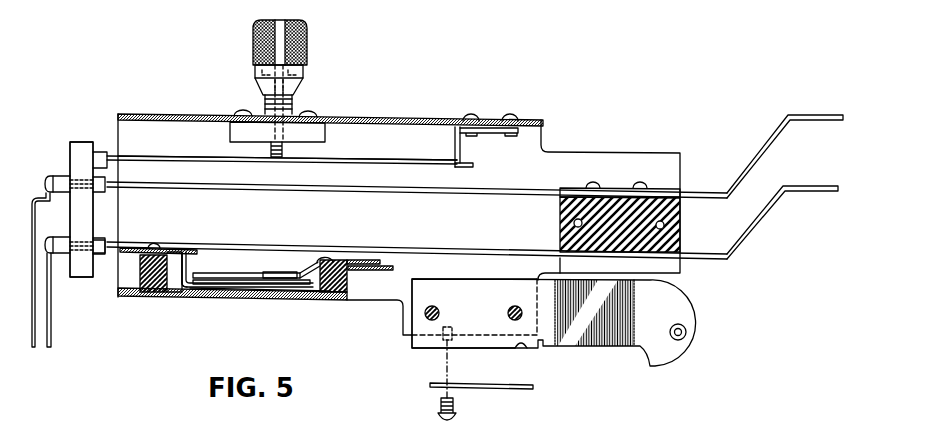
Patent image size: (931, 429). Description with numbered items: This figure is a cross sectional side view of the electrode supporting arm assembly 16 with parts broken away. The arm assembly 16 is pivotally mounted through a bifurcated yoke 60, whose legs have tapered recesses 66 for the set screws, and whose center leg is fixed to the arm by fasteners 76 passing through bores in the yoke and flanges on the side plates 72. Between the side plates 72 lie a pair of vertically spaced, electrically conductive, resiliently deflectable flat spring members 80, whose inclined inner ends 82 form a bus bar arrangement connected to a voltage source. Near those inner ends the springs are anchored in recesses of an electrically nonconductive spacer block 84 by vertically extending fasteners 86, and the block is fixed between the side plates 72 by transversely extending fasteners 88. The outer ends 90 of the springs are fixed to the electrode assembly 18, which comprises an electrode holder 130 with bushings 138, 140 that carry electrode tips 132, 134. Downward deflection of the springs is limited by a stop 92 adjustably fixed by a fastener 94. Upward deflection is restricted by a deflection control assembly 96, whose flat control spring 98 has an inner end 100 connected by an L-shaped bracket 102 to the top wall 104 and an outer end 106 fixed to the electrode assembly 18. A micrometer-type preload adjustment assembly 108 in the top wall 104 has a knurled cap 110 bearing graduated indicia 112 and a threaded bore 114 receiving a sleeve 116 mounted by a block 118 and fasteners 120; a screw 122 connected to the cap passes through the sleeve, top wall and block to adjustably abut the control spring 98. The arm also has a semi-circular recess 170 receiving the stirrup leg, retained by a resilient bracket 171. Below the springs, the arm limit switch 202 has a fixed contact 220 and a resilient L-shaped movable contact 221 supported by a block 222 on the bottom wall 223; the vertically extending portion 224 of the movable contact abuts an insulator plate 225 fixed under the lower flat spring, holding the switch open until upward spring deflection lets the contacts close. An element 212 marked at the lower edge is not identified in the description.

The arm assembly 16 is at (376, 303).
The electrode assembly 18 is at (66, 285).
The bifurcated yoke 60 is at (603, 350).
The tapered recess 66 is at (688, 332).
The side plates 72 is at (558, 152).
The fasteners 76 is at (509, 308).
The flat spring members 80 is at (470, 252).
The inner end of spring member 82 is at (811, 186).
The spacer block 84 is at (682, 209).
The fasteners 86 is at (640, 186).
The fasteners 88 is at (683, 226).
The outer ends of springs 90 is at (136, 243).
The stop 92 is at (146, 277).
The fastener 94 is at (172, 293).
The deflection control assembly 96 is at (309, 92).
The control spring 98 is at (386, 160).
The inner end of control spring 100 is at (474, 166).
The L-shaped bracket 102 is at (461, 150).
The top wall 104 is at (418, 118).
The outer end of control spring 106 is at (121, 157).
The preload adjustment assembly 108 is at (309, 42).
The knurled cap 110 is at (253, 35).
The graduated indicia 112 is at (261, 86).
The threaded bore 114 is at (260, 72).
The sleeve 116 is at (296, 101).
The block 118 is at (327, 136).
The fasteners 120 is at (317, 116).
The screw 122 is at (270, 150).
The electrode holder 130 is at (83, 138).
The electrode tip 132 is at (34, 352).
The electrode tip 134 is at (53, 344).
The bushing 138 is at (107, 185).
The bushing 140 is at (106, 255).
The semi-circular recess 170 is at (522, 350).
The resilient bracket 171 is at (497, 391).
The arm limit switch 202 is at (249, 299).
The element 212 is at (771, 426).
The fixed contact 220 is at (246, 272).
The movable contact 221 is at (230, 287).
The block 222 is at (291, 272).
The bottom wall 223 is at (309, 294).
The vertically extending portion 224 is at (189, 268).
The insulator plate 225 is at (184, 256).